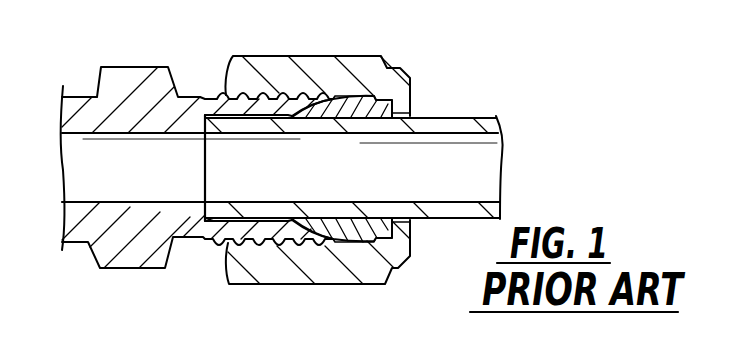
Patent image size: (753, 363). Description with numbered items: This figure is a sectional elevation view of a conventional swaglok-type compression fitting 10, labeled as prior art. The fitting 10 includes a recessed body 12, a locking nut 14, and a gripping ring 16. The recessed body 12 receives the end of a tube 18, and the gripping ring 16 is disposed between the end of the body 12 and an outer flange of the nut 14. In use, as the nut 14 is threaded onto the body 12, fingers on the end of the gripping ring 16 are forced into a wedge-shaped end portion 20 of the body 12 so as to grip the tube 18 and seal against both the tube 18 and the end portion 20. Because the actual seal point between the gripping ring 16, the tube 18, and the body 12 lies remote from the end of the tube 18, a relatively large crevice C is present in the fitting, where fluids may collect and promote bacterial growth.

The compression fitting 10 is at (484, 57).
The recessed body 12 is at (78, 233).
The locking nut 14 is at (288, 56).
The gripping ring 16 is at (332, 117).
The tube 18 is at (466, 117).
The wedge-shaped end portion 20 is at (310, 229).
The crevice C is at (247, 218).